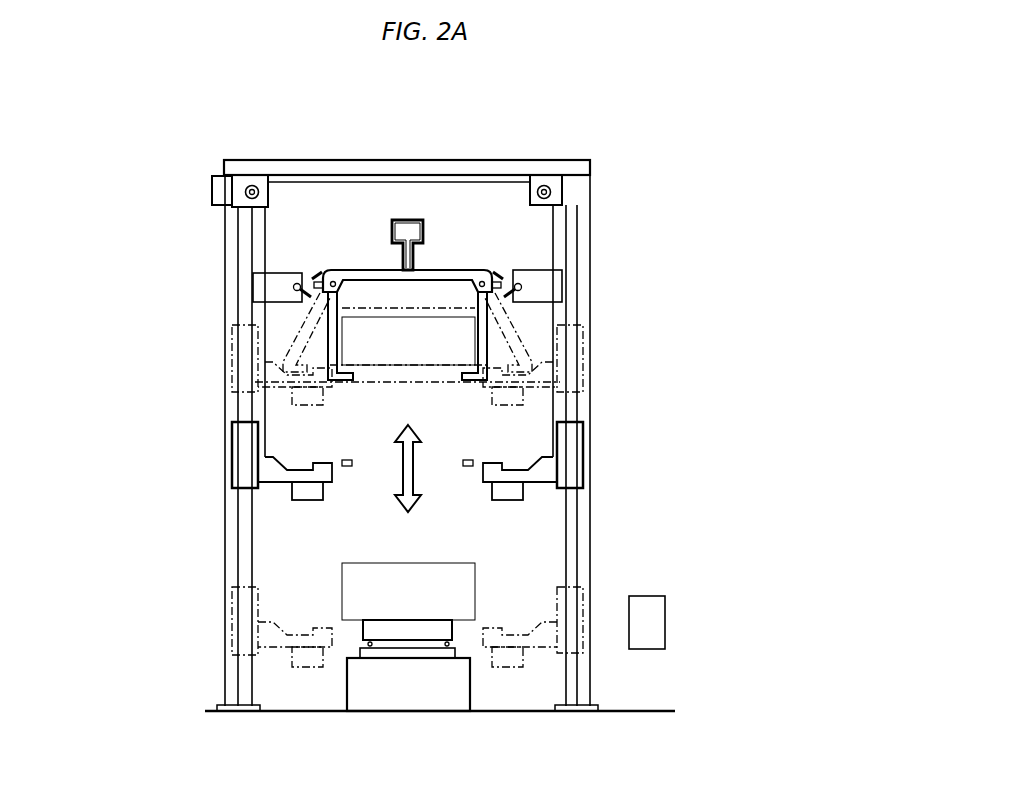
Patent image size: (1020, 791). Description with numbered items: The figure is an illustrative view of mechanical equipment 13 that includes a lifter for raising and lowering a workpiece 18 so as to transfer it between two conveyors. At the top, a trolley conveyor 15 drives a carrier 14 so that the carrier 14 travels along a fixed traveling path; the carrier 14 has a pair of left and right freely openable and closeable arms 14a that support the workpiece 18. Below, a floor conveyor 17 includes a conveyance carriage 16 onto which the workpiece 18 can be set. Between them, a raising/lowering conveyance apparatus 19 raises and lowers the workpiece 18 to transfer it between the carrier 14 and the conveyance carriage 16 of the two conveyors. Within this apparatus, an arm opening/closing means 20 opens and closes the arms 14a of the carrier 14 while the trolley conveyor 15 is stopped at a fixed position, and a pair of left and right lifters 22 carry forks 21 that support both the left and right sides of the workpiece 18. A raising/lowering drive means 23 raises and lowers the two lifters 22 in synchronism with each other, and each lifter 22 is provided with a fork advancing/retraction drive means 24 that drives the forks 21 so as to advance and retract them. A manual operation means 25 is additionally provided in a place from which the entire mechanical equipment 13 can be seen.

The mechanical equipment 13 is at (467, 148).
The carrier 14 is at (443, 272).
The arms 14a is at (333, 333).
The trolley conveyor 15 is at (385, 222).
The conveyance carriage 16 is at (410, 628).
The floor conveyor 17 is at (405, 666).
The workpiece 18 is at (378, 332).
The raising/lowering conveyance apparatus 19 is at (221, 465).
The arm opening/closing means 20 is at (282, 282).
The forks 21 is at (352, 463).
The lifters 22 is at (300, 475).
The raising/lowering drive means 23 is at (237, 189).
The fork advancing/retraction drive means 24 is at (307, 495).
The manual operation means 25 is at (650, 613).